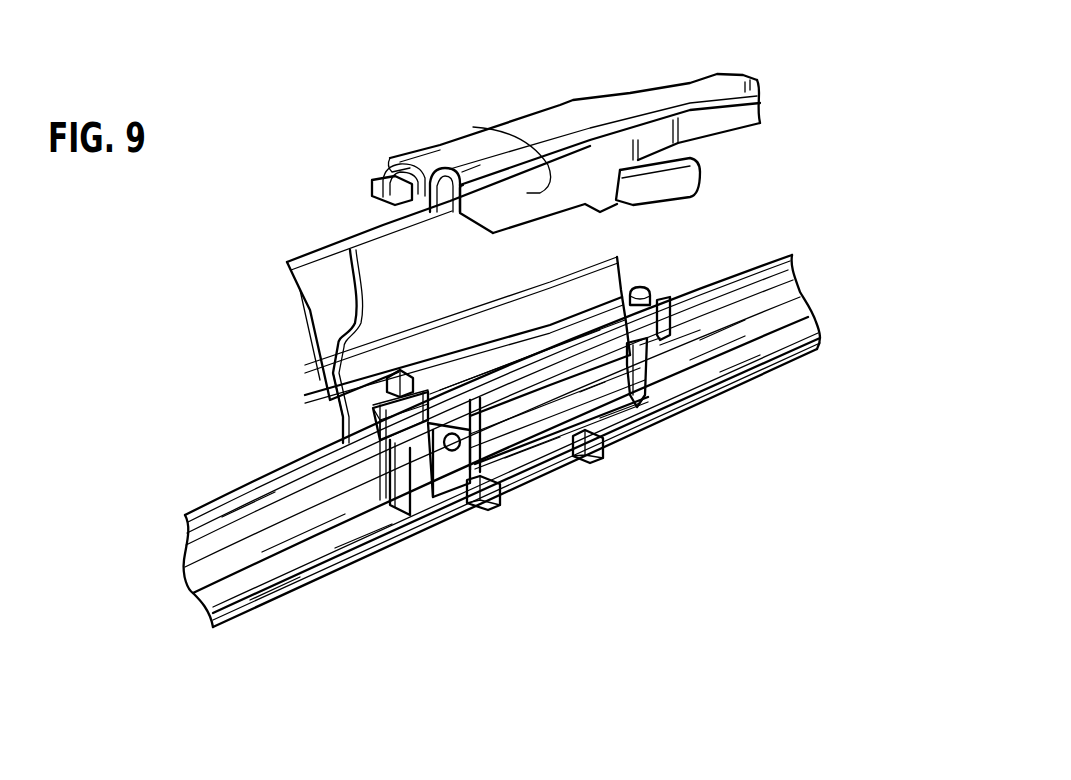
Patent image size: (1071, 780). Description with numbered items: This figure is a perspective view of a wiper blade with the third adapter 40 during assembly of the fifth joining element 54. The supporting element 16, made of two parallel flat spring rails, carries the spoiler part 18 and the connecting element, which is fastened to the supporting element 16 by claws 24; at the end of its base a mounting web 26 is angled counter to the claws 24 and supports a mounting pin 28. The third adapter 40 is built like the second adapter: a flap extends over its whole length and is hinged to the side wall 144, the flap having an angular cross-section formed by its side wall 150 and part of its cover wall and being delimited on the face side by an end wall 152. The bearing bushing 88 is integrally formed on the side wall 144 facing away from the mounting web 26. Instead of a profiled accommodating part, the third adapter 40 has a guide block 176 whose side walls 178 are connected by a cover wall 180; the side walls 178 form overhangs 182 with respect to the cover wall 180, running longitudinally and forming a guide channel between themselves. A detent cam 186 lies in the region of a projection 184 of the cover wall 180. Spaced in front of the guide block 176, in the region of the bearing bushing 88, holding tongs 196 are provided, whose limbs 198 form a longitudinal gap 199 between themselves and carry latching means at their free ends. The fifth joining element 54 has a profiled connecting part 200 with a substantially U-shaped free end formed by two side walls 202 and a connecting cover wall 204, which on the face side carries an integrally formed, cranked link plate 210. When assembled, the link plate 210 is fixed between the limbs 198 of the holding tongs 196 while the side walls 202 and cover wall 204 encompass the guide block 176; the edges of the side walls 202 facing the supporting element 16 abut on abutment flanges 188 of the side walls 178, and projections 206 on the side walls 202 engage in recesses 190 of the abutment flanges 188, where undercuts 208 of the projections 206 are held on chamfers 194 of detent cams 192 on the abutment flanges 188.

The supporting element 16 is at (556, 450).
The spoiler part 18 is at (777, 295).
The claws 24 is at (497, 500).
The mounting web 26 is at (453, 452).
The mounting pin 28 is at (473, 497).
The third adapter 40 is at (283, 352).
The fifth joining element 54 is at (577, 90).
The bearing bushing 88 is at (408, 442).
The side wall 144 is at (383, 387).
The side wall 150 is at (377, 230).
The end wall 152 is at (320, 308).
The guide block 176 is at (672, 348).
The side walls 178 is at (587, 392).
The cover wall 180 is at (547, 340).
The overhangs 182 is at (523, 363).
The projection 184 is at (658, 300).
The detent cam 186 is at (643, 293).
The abutment flanges 188 is at (520, 442).
The recesses 190 is at (635, 410).
The detent cams 192 is at (655, 388).
The chamfers 194 is at (650, 365).
The holding tongs 196 is at (372, 426).
The limbs 198 is at (383, 398).
The gap 199 is at (417, 373).
The profiled connecting part 200 is at (710, 85).
The side walls 202 is at (480, 130).
The cover wall 204 is at (550, 127).
The projections 206 is at (617, 200).
The undercuts 208 is at (640, 167).
The cranked link plate 210 is at (383, 180).